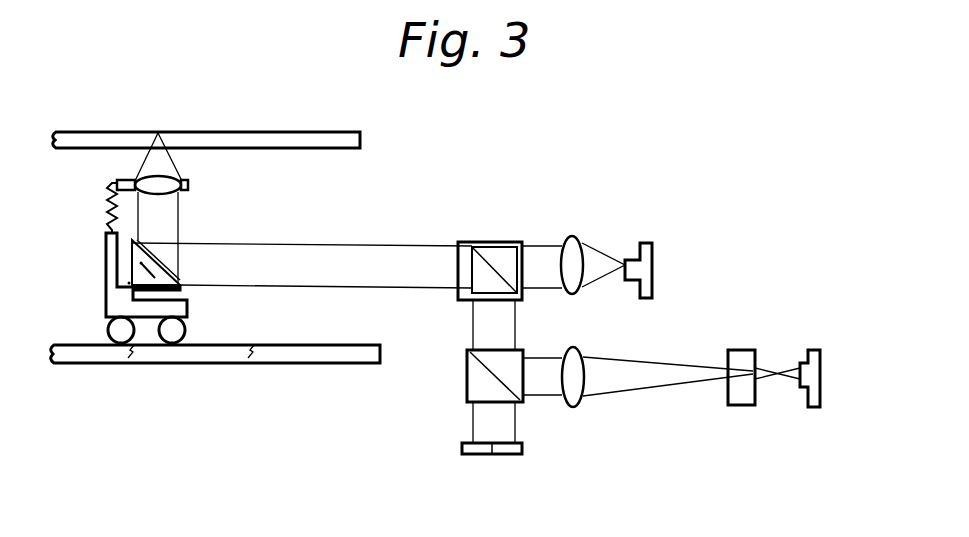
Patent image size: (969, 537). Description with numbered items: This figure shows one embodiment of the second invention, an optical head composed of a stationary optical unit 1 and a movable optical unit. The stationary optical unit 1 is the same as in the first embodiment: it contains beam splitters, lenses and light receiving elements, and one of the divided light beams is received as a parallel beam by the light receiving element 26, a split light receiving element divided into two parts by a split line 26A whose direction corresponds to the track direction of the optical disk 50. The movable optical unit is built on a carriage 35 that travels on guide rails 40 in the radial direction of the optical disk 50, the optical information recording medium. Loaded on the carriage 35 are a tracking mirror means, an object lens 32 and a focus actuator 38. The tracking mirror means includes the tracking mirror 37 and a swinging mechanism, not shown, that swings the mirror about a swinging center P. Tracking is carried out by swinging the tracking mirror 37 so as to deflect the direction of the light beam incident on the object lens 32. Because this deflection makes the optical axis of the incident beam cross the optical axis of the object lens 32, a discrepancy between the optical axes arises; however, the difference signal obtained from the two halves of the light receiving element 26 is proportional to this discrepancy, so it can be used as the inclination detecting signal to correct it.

The stationary optical unit 1 is at (622, 212).
The light receiving element 26 is at (524, 449).
The split line 26A is at (492, 452).
The object lens 32 is at (168, 181).
The carriage 35 is at (105, 300).
The tracking mirror 37 is at (167, 265).
The focus actuator 38 is at (104, 204).
The guide rails 40 is at (308, 357).
The optical disk 50 is at (303, 131).
The swinging center P is at (128, 282).